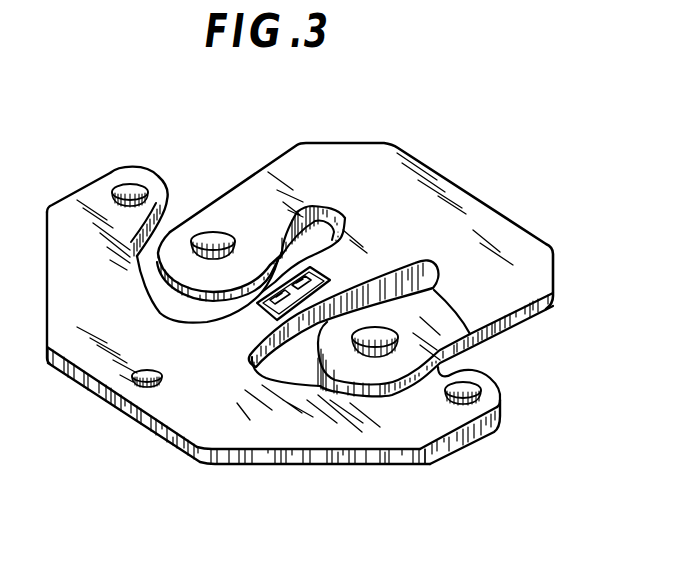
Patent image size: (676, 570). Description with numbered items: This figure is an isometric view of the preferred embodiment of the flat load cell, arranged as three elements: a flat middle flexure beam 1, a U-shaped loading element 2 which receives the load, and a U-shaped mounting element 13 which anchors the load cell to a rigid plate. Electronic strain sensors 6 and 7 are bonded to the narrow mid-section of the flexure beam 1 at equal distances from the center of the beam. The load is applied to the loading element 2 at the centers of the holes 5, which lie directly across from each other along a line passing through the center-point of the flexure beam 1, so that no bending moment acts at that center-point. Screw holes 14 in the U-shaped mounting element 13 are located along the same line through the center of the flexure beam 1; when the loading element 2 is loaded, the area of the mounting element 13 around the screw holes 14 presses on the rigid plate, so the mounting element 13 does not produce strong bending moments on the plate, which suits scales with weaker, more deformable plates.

The flexure beam 1 is at (388, 253).
The loading element 2 is at (523, 238).
The holes 5 is at (214, 233).
The electronic strain sensor 6 is at (330, 268).
The electronic strain sensor 7 is at (260, 318).
The U-shaped mounting element 13 is at (255, 435).
The screw holes 14 is at (128, 184).